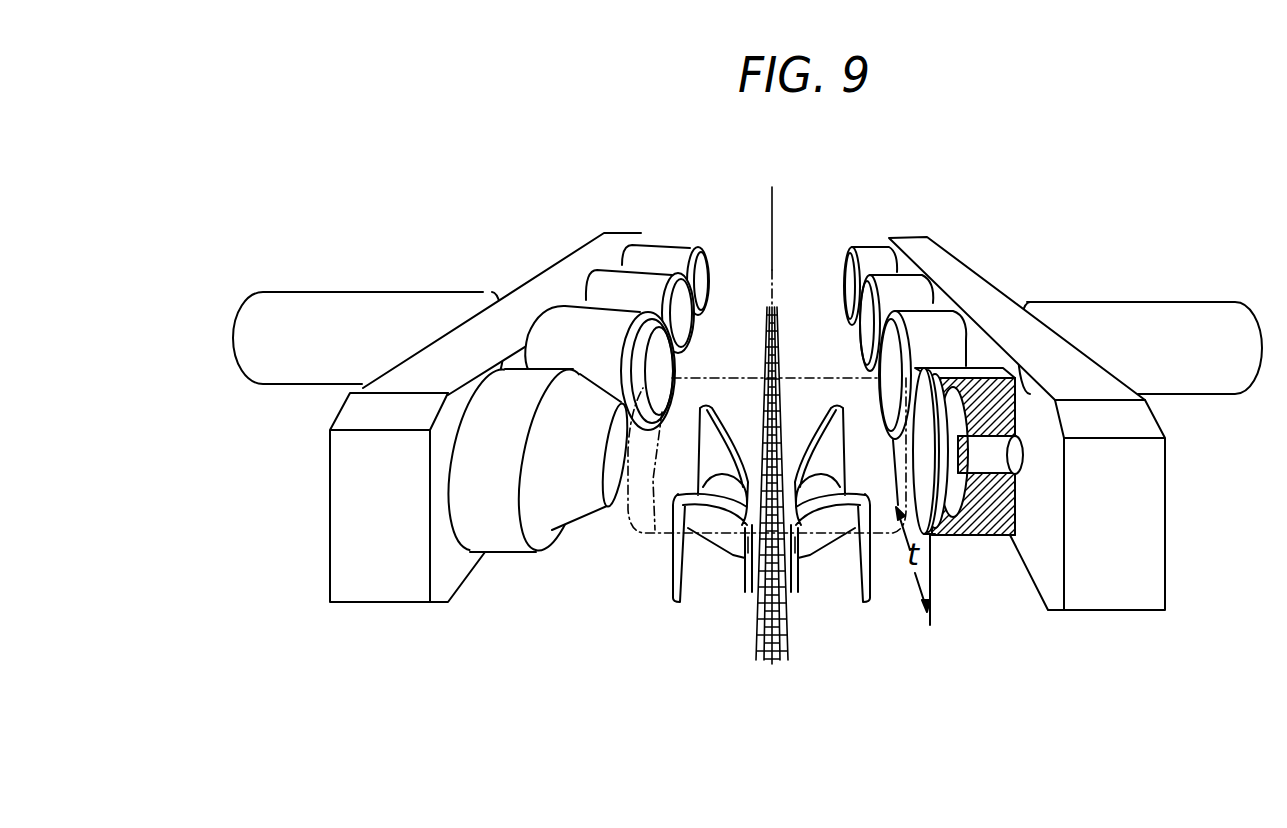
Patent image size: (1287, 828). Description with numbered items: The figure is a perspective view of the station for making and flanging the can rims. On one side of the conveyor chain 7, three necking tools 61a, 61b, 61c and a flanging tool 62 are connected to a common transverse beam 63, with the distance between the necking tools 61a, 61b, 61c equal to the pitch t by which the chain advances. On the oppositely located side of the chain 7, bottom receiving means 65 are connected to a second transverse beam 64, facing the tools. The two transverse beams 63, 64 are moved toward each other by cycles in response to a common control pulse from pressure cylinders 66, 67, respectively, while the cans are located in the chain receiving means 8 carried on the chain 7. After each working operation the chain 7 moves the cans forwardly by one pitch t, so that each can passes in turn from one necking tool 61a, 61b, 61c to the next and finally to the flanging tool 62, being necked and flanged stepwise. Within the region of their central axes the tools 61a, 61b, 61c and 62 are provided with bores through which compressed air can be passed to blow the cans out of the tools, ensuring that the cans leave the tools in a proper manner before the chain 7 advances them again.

The chain 7 is at (787, 637).
The chain receiving means 8 is at (855, 565).
The necking tool 61a is at (660, 243).
The necking tool 61b is at (703, 328).
The necking tool 61c is at (683, 380).
The flanging tool 62 is at (575, 516).
The common transverse beam 63 is at (571, 275).
The second transverse beam 64 is at (972, 287).
The bottom receiving means 65 is at (913, 283).
The pressure cylinder 66 is at (377, 303).
The pressure cylinder 67 is at (1147, 315).